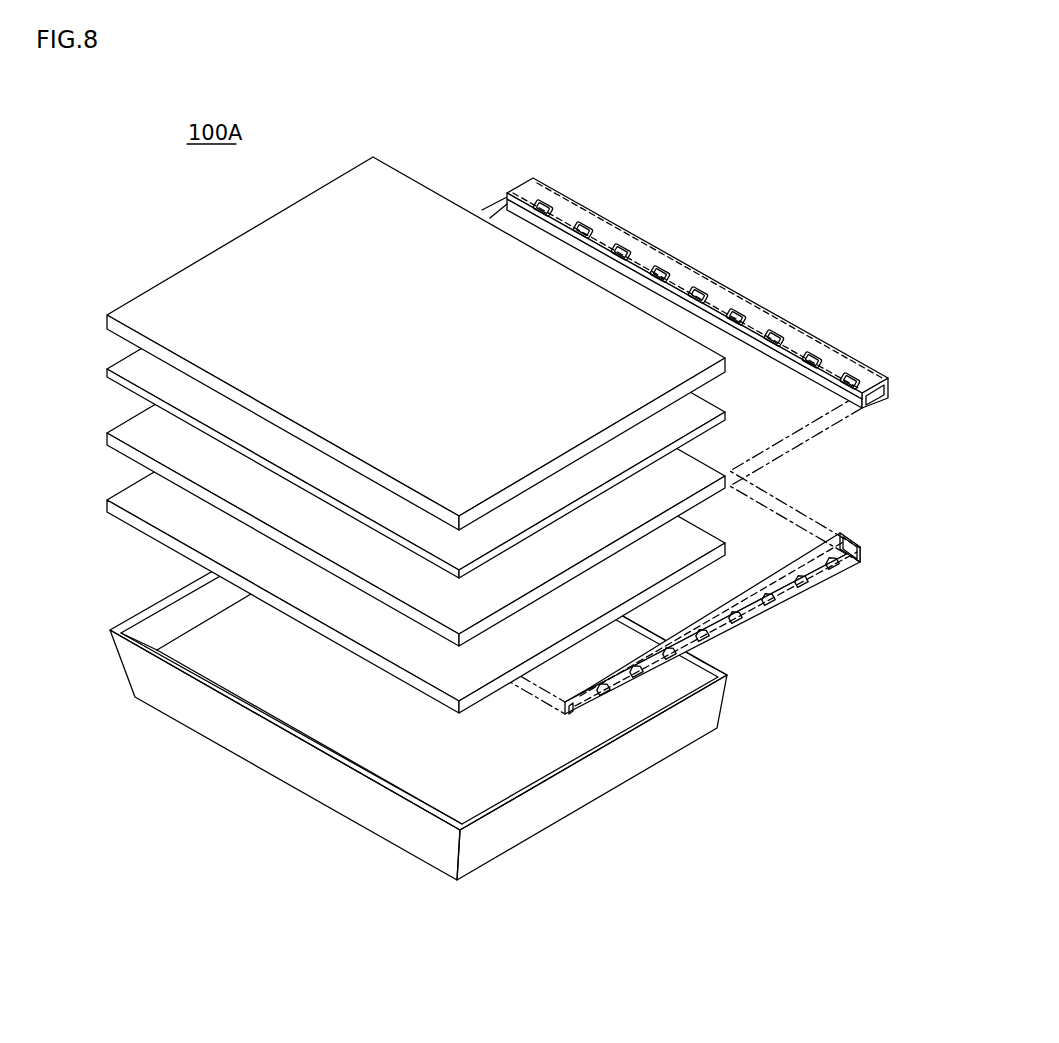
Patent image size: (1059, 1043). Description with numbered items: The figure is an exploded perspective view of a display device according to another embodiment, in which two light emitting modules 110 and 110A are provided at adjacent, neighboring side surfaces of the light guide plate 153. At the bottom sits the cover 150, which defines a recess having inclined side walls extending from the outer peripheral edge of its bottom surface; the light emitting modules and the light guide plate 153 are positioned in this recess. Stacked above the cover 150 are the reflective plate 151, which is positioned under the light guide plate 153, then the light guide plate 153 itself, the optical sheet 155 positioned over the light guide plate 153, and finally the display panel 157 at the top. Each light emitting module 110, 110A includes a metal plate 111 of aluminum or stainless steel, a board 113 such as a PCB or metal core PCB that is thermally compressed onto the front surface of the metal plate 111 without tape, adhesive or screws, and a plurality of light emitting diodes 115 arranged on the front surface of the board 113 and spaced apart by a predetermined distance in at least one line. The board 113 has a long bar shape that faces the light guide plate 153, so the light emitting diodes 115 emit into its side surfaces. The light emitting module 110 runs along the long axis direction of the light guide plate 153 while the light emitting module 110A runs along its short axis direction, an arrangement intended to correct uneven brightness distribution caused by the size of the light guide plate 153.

The light emitting module 110 is at (693, 288).
The light emitting module 110A is at (661, 698).
The metal plate 111 is at (510, 190).
The board 113 is at (876, 405).
The light emitting diodes 115 is at (854, 364).
The cover 150 is at (135, 613).
The reflective plate 151 is at (106, 508).
The light guide plate 153 is at (106, 440).
The optical sheet 155 is at (106, 375).
The display panel 157 is at (106, 323).